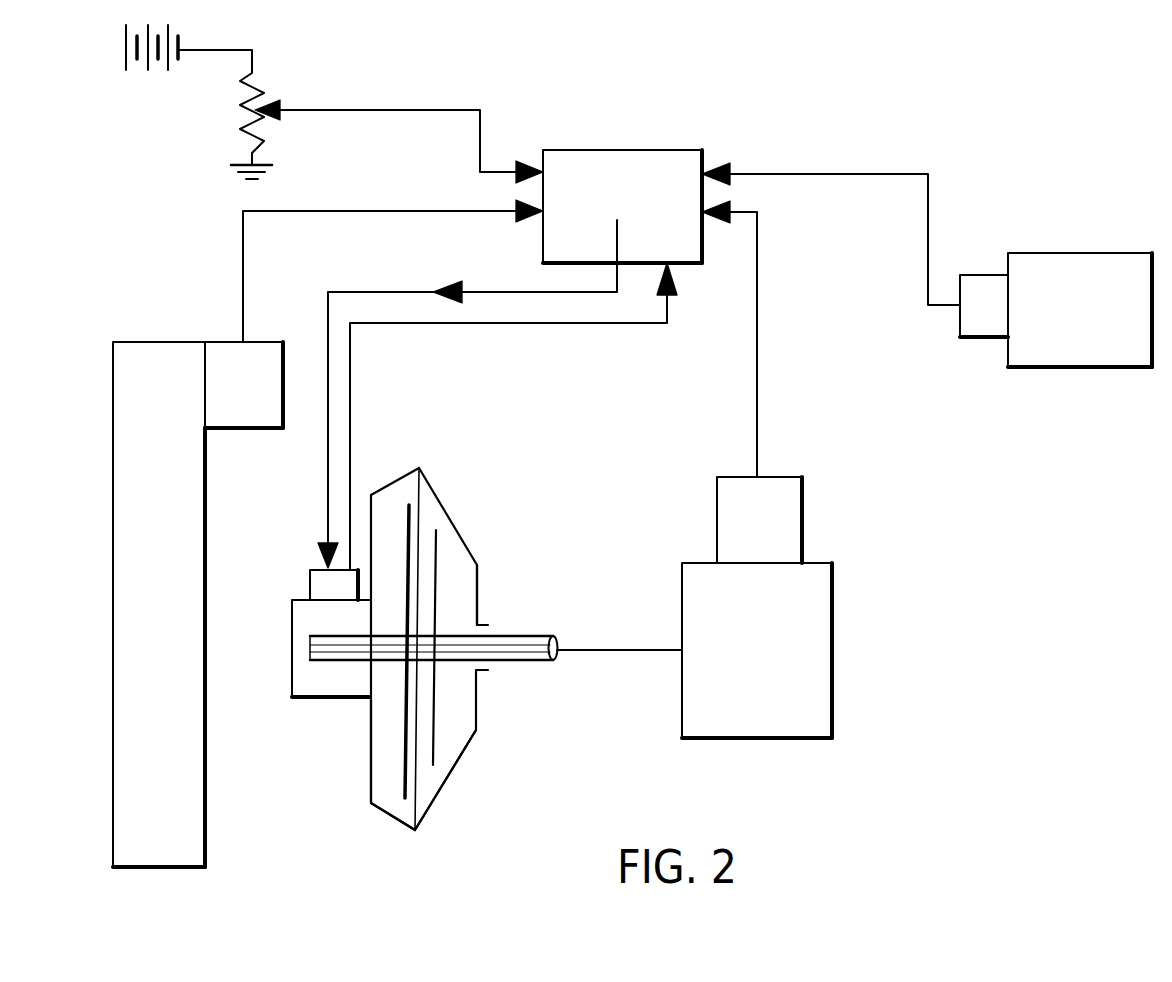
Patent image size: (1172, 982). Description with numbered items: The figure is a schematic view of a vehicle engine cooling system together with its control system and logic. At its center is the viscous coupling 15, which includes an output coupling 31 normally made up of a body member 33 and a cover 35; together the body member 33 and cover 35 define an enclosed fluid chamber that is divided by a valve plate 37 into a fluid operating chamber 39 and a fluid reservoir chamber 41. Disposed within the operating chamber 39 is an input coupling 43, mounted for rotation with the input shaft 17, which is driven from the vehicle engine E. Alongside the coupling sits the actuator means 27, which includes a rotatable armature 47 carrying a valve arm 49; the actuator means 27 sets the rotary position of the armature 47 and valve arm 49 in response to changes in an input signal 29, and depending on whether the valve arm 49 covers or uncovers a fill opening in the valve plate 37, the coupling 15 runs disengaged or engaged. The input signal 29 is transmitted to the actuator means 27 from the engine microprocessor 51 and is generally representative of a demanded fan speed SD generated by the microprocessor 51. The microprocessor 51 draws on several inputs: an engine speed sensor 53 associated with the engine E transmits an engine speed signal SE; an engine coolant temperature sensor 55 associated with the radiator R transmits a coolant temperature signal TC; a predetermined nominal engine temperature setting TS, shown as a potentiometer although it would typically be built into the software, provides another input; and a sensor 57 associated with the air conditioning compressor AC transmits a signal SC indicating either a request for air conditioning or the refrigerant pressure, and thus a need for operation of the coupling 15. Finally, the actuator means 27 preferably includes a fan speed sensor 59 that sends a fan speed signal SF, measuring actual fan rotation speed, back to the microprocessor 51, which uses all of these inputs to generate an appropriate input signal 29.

The viscous coupling 15 is at (455, 482).
The input shaft 17 is at (461, 674).
The actuator means 27 is at (313, 683).
The input signal 29 is at (328, 458).
The output coupling 31 is at (434, 647).
The body member 33 is at (463, 760).
The cover 35 is at (368, 740).
The valve plate 37 is at (420, 506).
The fluid operating chamber 39 is at (455, 573).
The fluid reservoir chamber 41 is at (390, 760).
The input coupling 43 is at (437, 608).
The armature 47 is at (333, 643).
The valve arm 49 is at (403, 522).
The engine microprocessor 51 is at (622, 158).
The engine speed sensor 53 is at (787, 517).
The engine coolant temperature sensor 55 is at (265, 350).
The sensor 57 is at (985, 338).
The fan speed sensor 59 is at (310, 571).
The radiator R is at (133, 638).
The vehicle engine E is at (757, 650).
The air conditioning compressor AC is at (1080, 310).
The nominal engine temperature setting TS is at (414, 110).
The coolant temperature signal TC is at (416, 211).
The demanded fan speed SD is at (617, 238).
The fan speed signal SF is at (557, 323).
The air conditioning signal SC is at (828, 174).
The engine speed signal SE is at (760, 380).